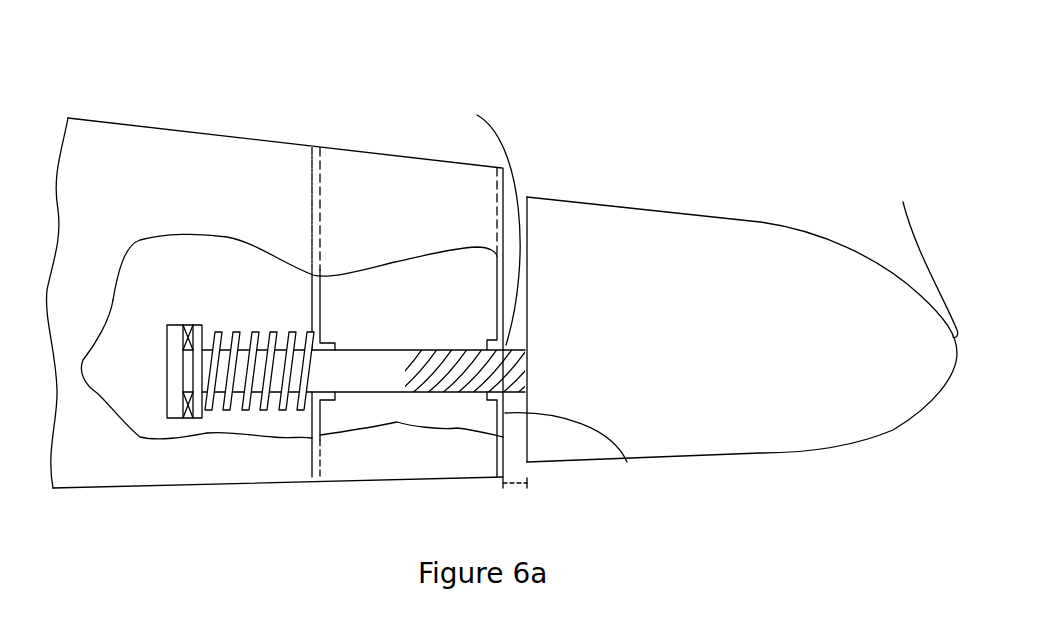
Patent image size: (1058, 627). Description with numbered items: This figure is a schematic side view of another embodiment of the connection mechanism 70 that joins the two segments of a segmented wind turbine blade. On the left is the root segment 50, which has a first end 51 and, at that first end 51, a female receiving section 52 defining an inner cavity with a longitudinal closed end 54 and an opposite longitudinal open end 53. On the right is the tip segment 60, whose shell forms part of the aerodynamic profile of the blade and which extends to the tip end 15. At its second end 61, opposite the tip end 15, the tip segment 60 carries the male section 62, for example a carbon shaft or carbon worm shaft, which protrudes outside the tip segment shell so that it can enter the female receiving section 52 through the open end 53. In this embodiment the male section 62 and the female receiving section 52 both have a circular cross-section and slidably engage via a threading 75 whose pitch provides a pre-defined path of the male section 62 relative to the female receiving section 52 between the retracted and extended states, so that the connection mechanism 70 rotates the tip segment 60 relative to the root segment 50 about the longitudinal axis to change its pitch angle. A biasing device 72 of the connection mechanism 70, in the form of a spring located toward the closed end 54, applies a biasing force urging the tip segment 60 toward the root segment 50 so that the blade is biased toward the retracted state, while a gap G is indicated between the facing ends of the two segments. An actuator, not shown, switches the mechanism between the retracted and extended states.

The root segment 50 is at (117, 118).
The connection mechanism 70 is at (381, 324).
The male section 62 is at (399, 345).
The open end 53 is at (480, 218).
The tip segment 60 is at (726, 216).
The tip end 15 is at (921, 246).
The closed end 54 is at (168, 378).
The biasing device 72 is at (223, 413).
The female receiving section 52 is at (330, 406).
The threading 75 is at (453, 393).
The second end 61 is at (525, 442).
The first end 51 is at (579, 455).
The gap G is at (513, 485).